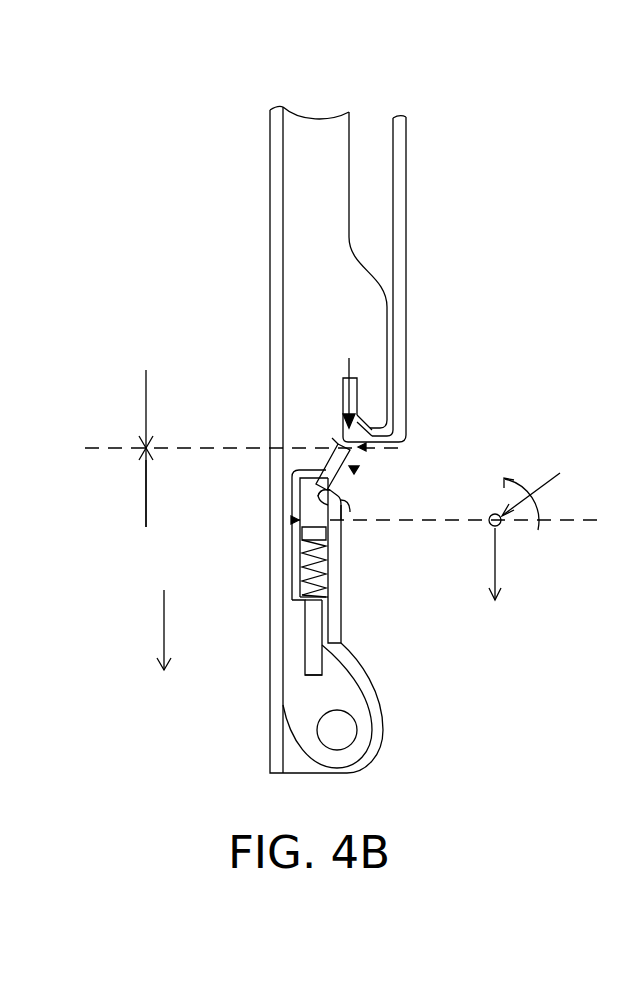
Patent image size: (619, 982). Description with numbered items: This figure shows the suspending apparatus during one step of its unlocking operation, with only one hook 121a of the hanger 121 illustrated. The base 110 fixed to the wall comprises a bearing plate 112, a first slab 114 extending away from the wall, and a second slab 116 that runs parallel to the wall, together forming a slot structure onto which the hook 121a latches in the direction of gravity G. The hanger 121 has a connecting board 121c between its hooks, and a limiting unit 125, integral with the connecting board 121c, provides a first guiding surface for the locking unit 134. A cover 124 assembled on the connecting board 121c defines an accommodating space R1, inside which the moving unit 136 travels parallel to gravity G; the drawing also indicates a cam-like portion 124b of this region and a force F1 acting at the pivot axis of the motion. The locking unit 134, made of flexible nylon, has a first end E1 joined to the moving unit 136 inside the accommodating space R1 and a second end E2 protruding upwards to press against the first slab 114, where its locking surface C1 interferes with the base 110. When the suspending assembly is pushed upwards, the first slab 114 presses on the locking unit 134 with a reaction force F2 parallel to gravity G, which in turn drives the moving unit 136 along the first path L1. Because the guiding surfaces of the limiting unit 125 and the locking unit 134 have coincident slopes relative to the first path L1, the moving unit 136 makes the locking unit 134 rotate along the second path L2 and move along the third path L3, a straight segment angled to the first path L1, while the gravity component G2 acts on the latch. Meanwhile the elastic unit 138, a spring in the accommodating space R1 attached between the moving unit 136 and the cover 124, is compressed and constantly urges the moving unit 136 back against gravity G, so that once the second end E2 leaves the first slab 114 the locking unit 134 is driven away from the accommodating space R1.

The base 110 is at (439, 279).
The bearing plate 112 is at (397, 368).
The first slab 114 is at (372, 432).
The second slab 116 is at (352, 392).
The hanger 121 is at (217, 121).
The hook 121a is at (313, 128).
The connecting board 121c is at (337, 557).
The cover 124 is at (304, 603).
The cam portion of lever 124b is at (340, 497).
The limiting unit 125 is at (350, 515).
The locking unit 134 is at (322, 478).
The moving unit 136 is at (304, 532).
The elastic unit 138 is at (308, 575).
The locking surface C1 is at (336, 436).
The first end E1 is at (296, 520).
The second end E2 is at (362, 447).
The force F1 is at (128, 493).
The reaction force F2 is at (346, 366).
The gravity G is at (149, 630).
The gravity component G2 is at (355, 468).
The first path L1 is at (509, 569).
The second path L2 is at (523, 537).
The third path L3 is at (546, 492).
The accommodating space R1 is at (325, 598).